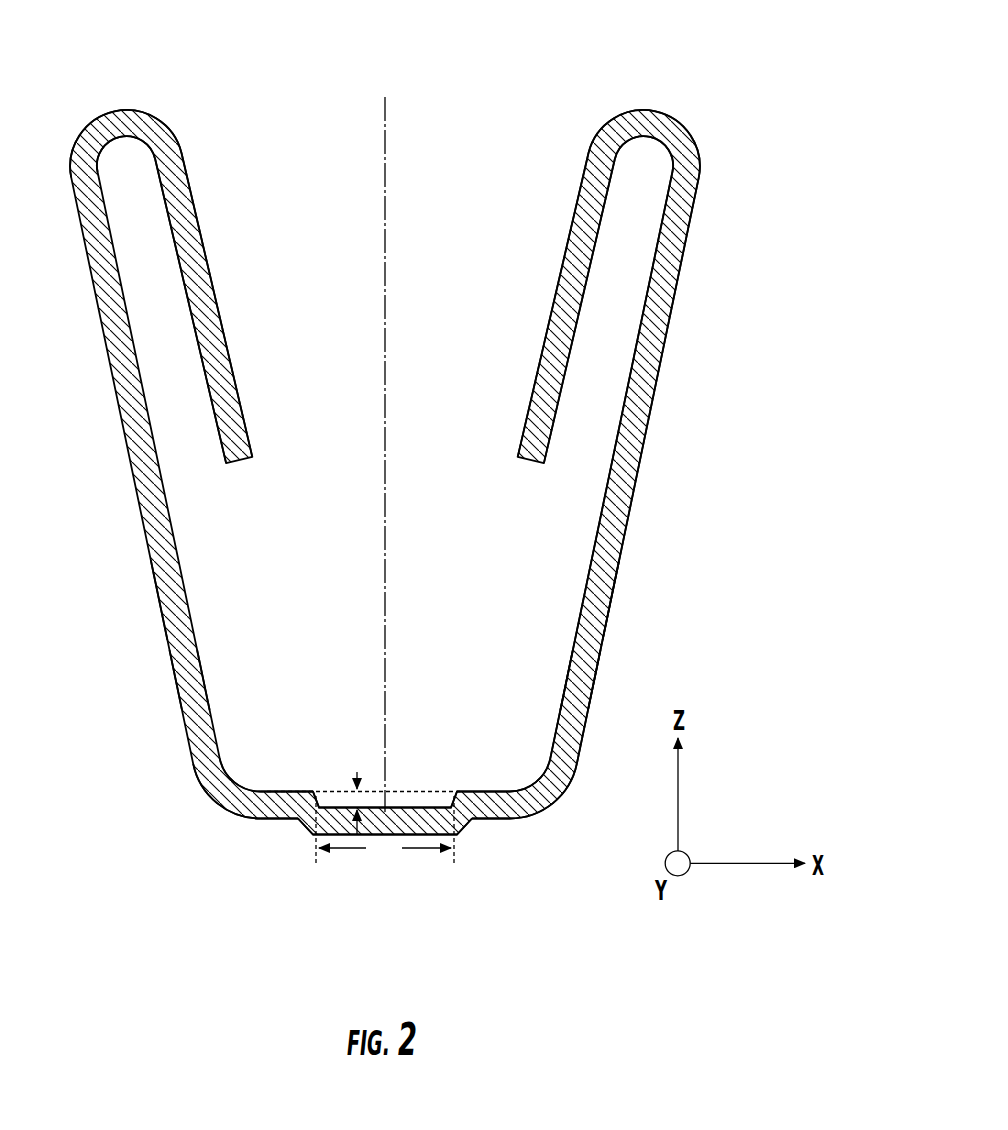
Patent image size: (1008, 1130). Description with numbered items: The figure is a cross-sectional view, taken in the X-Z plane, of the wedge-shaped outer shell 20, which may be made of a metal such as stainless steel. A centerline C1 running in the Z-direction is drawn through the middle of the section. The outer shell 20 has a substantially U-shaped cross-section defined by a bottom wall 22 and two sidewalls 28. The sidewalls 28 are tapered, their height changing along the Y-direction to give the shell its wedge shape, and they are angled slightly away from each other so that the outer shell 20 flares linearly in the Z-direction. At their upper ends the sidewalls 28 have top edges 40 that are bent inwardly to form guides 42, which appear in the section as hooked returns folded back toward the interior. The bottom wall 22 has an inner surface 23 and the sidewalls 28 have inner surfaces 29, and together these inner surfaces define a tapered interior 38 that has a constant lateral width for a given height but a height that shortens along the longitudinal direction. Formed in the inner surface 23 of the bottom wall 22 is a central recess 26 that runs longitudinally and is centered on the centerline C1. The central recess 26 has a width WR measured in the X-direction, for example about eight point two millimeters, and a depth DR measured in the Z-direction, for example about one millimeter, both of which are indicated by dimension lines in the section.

The outer shell 20 is at (749, 99).
The bottom wall 22 is at (505, 808).
The inner surface of bottom wall 23 is at (294, 814).
The central recess 26 is at (418, 807).
The sidewalls 28 is at (157, 603).
The inner surfaces of sidewalls 29 is at (208, 704).
The tapered interior 38 is at (548, 511).
The top edges 40 is at (83, 130).
The guides 42 is at (181, 122).
The centerline C1 is at (385, 250).
The depth of central recess DR is at (357, 774).
The width of central recess WR is at (385, 831).